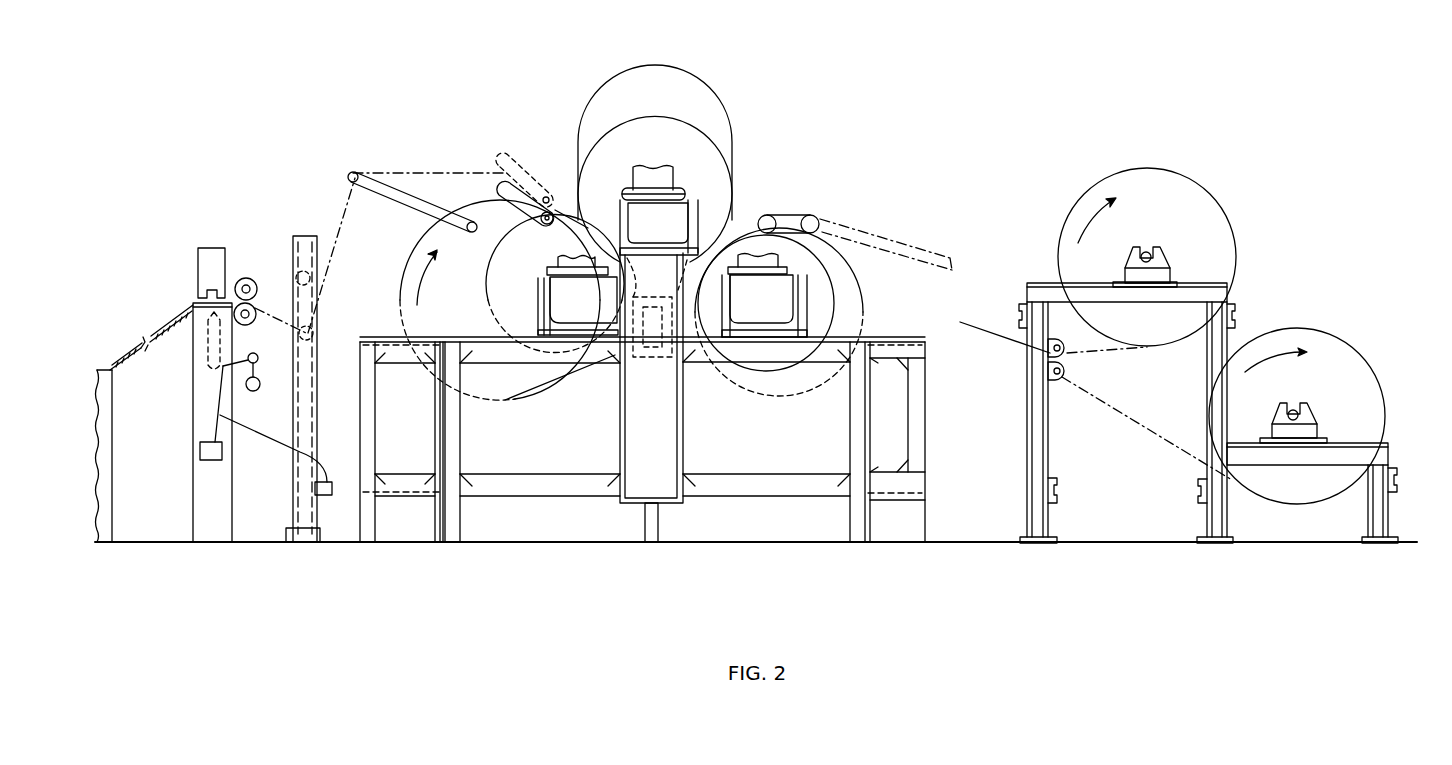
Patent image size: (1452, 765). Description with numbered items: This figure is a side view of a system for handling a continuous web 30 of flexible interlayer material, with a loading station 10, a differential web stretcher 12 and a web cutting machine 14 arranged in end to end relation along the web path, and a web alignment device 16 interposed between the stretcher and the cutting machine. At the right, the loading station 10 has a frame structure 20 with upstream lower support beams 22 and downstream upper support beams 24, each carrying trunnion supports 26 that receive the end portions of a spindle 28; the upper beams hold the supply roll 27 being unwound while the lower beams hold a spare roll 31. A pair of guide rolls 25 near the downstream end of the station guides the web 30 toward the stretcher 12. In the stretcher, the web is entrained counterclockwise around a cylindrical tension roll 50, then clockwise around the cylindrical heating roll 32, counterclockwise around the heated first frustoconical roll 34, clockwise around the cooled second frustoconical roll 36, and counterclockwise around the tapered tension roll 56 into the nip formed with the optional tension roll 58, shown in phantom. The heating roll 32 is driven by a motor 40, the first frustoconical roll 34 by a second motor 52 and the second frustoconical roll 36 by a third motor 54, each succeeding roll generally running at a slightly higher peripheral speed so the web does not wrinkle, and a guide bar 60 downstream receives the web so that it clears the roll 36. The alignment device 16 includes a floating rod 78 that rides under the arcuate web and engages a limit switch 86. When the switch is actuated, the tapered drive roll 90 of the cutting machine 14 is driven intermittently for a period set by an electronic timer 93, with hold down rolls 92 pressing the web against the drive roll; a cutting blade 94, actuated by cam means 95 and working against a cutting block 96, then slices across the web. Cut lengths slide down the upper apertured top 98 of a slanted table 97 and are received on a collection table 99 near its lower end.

The loading station 10 is at (1213, 548).
The differential web stretcher 12 is at (915, 547).
The web cutting machine 14 is at (210, 240).
The web alignment device 16 is at (303, 234).
The frame structure 20 is at (1027, 472).
The upstream lower support beams 22 is at (1298, 467).
The downstream upper support beams 24 is at (1040, 283).
The guide rolls 25 is at (1065, 343).
The trunnion supports 26 is at (1167, 255).
The supply roll 27 is at (1193, 180).
The spindle 28 is at (1144, 250).
The continuous web 30 is at (410, 172).
The spare roll 31 is at (1333, 332).
The cylindrical heating roll 32 is at (767, 368).
The first frustoconical roll 34 is at (710, 92).
The second frustoconical roll 36 is at (510, 400).
The motor 40 is at (787, 297).
The cylindrical tension roll 50 is at (793, 213).
The second motor 52 is at (682, 215).
The third motor 54 is at (562, 300).
The tapered tension roll 56 is at (515, 205).
The optional additional tension roll 58 is at (513, 150).
The guide bar 60 is at (378, 195).
The floating rod 78 is at (312, 333).
The limit switch 86 is at (308, 490).
The tapered drive roll 90 is at (250, 319).
The hold down rolls 92 is at (248, 278).
The electronic timer 93 is at (200, 450).
The cutting blade 94 is at (207, 334).
The cam means 95 is at (257, 391).
The cutting block 96 is at (223, 247).
The slanted table 97 is at (143, 344).
The upper apertured top 98 is at (193, 307).
The collection table 99 is at (113, 368).